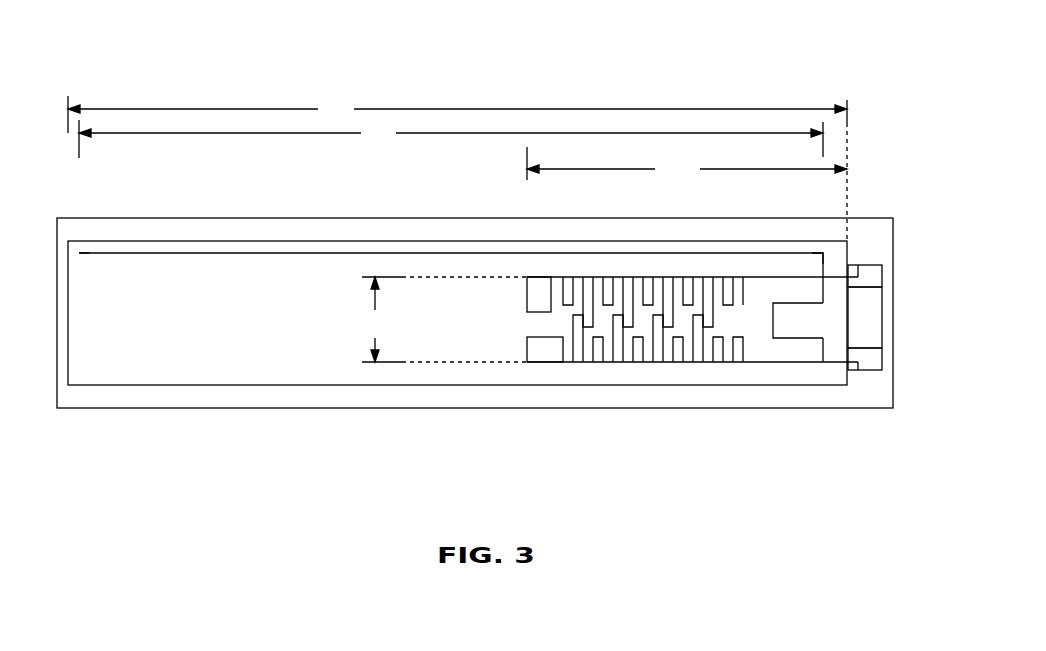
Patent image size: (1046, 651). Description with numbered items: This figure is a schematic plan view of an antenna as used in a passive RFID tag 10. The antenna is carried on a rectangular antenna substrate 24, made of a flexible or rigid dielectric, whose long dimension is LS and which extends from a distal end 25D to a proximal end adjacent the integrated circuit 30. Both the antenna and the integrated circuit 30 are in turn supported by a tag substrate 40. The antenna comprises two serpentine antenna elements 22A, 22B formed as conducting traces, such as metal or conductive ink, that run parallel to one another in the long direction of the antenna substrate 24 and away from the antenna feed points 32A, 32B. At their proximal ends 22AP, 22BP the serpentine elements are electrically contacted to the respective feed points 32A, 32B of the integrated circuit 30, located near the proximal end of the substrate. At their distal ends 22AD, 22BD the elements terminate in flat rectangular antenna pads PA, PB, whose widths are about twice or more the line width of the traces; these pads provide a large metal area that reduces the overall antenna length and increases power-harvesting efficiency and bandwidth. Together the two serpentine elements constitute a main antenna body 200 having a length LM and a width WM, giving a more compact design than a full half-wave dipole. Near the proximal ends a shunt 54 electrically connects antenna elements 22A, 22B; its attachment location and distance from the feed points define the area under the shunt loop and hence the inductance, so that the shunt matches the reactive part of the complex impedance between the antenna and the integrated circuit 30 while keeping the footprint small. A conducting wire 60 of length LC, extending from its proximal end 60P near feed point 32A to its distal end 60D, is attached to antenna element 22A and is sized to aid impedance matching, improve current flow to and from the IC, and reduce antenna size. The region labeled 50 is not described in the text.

The passive RFID tag 10 is at (787, 85).
The antenna substrate 24 is at (129, 360).
The distal end of antenna substrate 25D is at (67, 350).
The conducting wire 60 is at (222, 253).
The distal end of conducting wire 60D is at (80, 254).
The proximal end of conducting wire 60P is at (823, 253).
The insulating layer 50 is at (252, 266).
The shunt 54 is at (803, 338).
The serpentine antenna element 22A is at (777, 277).
The serpentine antenna element 22B is at (767, 362).
The distal end of serpentine antenna element 22A 22AD is at (504, 288).
The distal end of serpentine antenna element 22B 22BD is at (504, 352).
The proximal end of serpentine antenna element 22A 22AP is at (857, 265).
The proximal end of serpentine antenna element 22B 22BP is at (862, 372).
The antenna pad PA is at (540, 290).
The antenna pad PB is at (548, 348).
The main antenna body 200 is at (580, 368).
The integrated circuit 30 is at (877, 334).
The antenna feed point 32A is at (883, 278).
The antenna feed point 32B is at (883, 352).
The tag substrate 40 is at (884, 251).
The long dimension of antenna substrate LS is at (457, 168).
The length of conducting wire LC is at (451, 139).
The length of main antenna body LM is at (687, 165).
The width of main antenna body WM is at (442, 319).